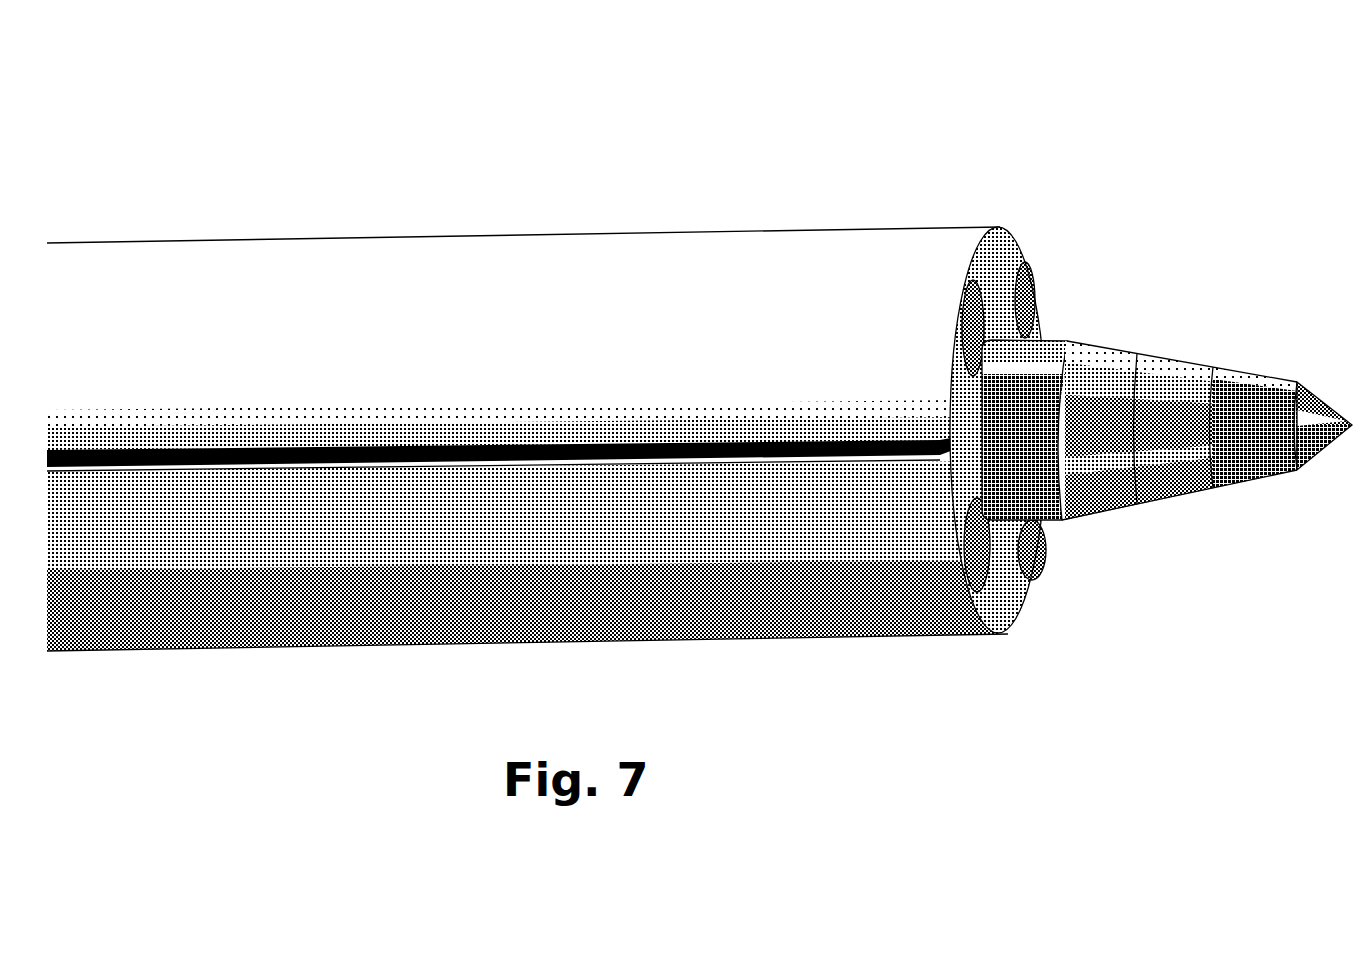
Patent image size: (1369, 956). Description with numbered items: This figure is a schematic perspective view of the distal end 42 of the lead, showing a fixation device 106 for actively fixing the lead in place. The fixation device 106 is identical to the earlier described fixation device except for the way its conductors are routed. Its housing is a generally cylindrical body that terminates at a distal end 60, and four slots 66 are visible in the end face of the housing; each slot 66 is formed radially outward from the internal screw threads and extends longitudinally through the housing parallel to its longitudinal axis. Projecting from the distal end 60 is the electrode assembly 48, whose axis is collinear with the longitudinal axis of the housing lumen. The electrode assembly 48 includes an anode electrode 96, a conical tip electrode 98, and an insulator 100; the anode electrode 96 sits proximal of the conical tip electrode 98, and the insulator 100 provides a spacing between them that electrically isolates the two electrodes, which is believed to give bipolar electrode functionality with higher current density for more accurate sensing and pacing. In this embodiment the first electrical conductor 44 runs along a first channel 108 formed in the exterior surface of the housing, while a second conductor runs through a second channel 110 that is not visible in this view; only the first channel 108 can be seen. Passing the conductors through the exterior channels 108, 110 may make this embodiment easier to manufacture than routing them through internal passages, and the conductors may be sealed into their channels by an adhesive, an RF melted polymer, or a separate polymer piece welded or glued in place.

The distal end 42 is at (296, 150).
The first electrical conductor 44 is at (897, 458).
The electrode assembly 48 is at (1160, 350).
The distal end 60 is at (900, 640).
The slot 66 is at (985, 250).
The anode electrode 96 is at (1062, 521).
The conical tip electrode 98 is at (1268, 373).
The insulator 100 is at (1188, 490).
The fixation device 106 is at (667, 228).
The first channel 108 is at (668, 460).
The second channel 110 is at (858, 232).